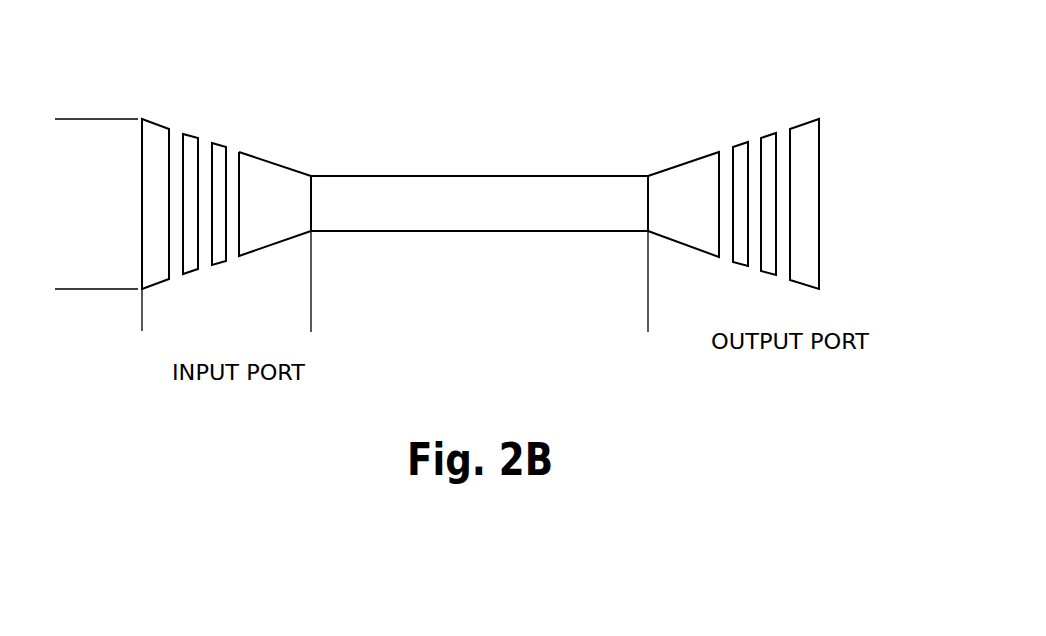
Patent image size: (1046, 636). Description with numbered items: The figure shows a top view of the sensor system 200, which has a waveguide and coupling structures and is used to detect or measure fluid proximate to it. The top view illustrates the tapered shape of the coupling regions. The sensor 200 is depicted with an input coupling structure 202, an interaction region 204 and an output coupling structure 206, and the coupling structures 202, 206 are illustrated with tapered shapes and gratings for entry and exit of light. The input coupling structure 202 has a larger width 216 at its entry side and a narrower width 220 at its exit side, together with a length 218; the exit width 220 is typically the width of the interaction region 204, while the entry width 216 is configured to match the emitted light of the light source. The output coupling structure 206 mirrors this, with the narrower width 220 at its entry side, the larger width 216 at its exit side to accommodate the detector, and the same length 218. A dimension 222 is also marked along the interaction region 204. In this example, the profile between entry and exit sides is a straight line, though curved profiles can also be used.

The sensor system 200 is at (480, 258).
The input coupling structure 202 is at (212, 98).
The interaction region 204 is at (497, 66).
The output coupling structure 206 is at (759, 84).
The larger width 216 is at (73, 120).
The length 218 is at (310, 313).
The narrower width 220 is at (361, 177).
The waveguide length dimension 222 is at (312, 313).